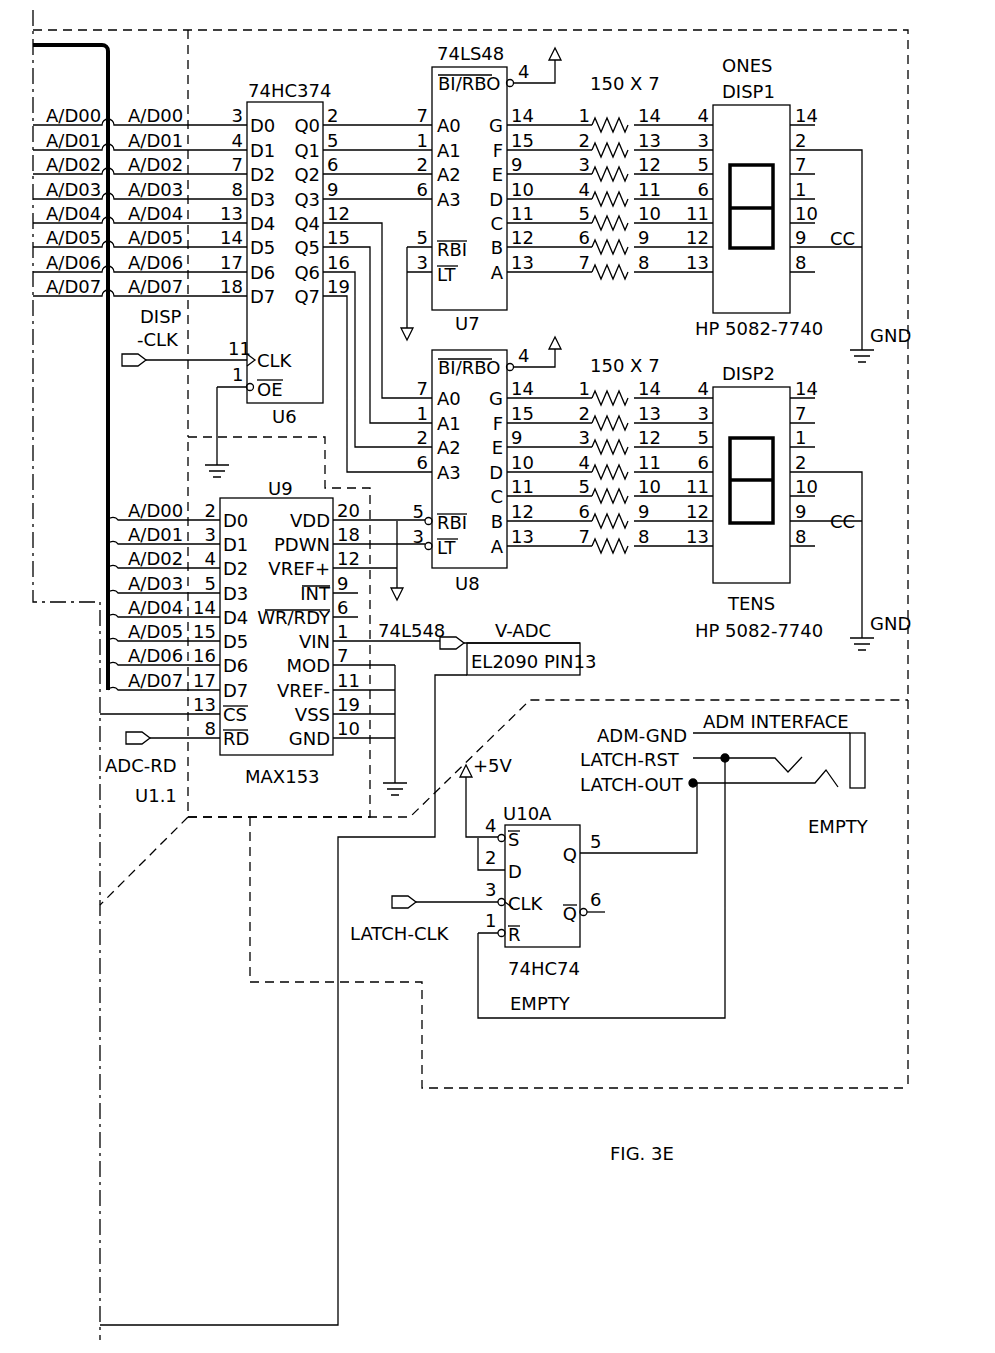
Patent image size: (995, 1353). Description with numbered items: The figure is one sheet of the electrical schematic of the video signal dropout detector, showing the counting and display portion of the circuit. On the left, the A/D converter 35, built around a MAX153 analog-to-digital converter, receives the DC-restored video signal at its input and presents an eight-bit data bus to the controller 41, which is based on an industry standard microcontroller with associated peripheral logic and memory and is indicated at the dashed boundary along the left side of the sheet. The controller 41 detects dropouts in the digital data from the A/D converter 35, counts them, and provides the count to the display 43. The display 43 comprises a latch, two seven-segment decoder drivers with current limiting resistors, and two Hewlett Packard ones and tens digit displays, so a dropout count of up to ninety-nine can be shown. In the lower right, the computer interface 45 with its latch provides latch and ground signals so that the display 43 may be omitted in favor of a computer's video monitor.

The display 43 is at (617, 32).
The A/D converter 35 is at (230, 817).
The controller 41 is at (123, 883).
The computer interface 45 is at (452, 1090).